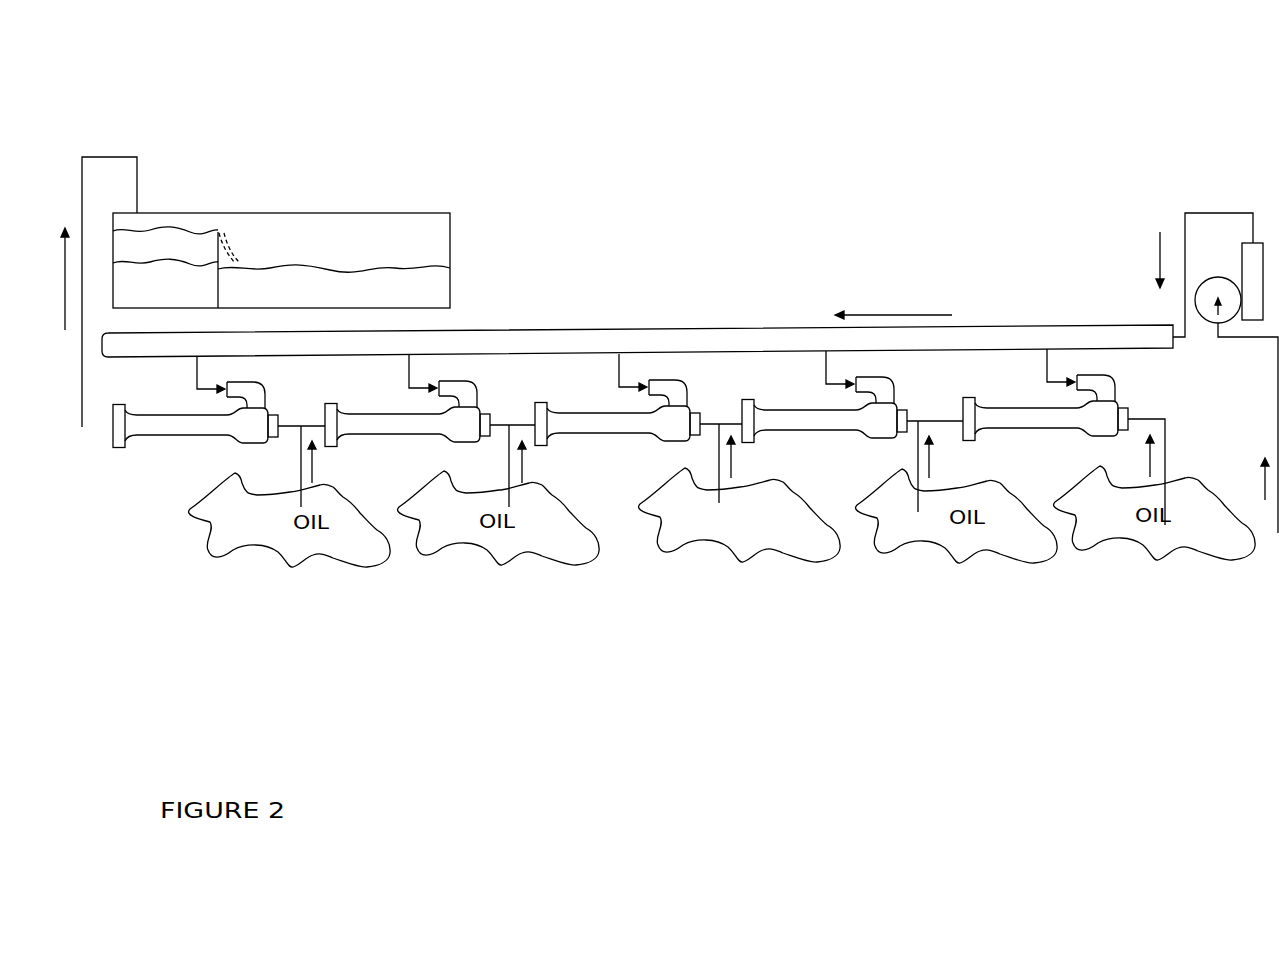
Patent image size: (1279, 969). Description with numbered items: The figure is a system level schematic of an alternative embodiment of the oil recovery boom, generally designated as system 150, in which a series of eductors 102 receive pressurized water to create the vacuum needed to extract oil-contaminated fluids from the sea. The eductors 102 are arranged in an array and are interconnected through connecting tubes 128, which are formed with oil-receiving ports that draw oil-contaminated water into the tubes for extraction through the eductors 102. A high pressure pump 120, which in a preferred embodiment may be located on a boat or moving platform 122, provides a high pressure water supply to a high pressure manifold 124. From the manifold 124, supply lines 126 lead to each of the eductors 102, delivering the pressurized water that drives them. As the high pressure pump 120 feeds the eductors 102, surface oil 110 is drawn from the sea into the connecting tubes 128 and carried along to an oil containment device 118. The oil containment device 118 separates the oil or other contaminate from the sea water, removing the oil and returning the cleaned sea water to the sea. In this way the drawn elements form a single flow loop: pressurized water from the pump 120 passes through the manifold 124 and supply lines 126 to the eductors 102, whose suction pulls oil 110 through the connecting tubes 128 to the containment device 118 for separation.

The system 150 is at (160, 88).
The boat or moving platform 122 is at (192, 228).
The oil containment device 118 is at (275, 283).
The connecting tubes 128 is at (523, 413).
The eductors 102 is at (603, 412).
The high pressure manifold 124 is at (765, 327).
The supply lines 126 is at (1057, 360).
The high pressure pump 120 is at (1223, 279).
The oil 110 is at (765, 525).